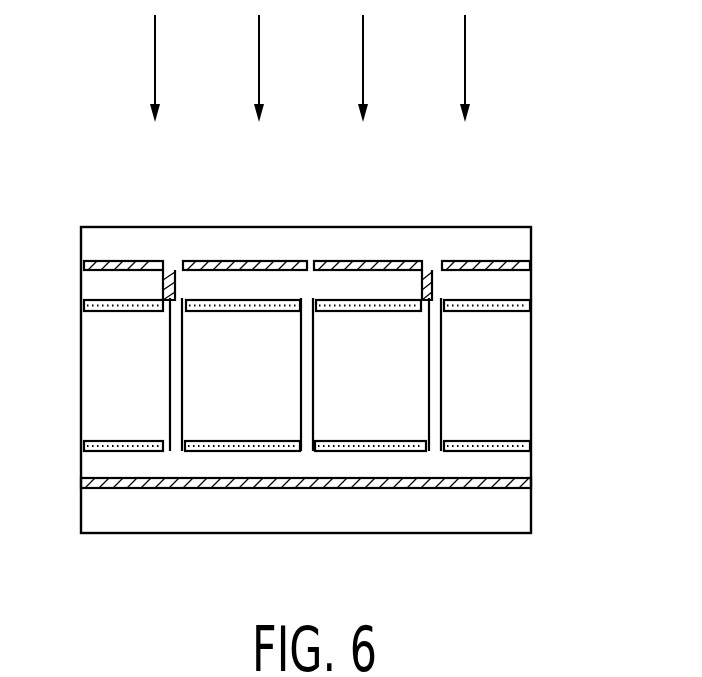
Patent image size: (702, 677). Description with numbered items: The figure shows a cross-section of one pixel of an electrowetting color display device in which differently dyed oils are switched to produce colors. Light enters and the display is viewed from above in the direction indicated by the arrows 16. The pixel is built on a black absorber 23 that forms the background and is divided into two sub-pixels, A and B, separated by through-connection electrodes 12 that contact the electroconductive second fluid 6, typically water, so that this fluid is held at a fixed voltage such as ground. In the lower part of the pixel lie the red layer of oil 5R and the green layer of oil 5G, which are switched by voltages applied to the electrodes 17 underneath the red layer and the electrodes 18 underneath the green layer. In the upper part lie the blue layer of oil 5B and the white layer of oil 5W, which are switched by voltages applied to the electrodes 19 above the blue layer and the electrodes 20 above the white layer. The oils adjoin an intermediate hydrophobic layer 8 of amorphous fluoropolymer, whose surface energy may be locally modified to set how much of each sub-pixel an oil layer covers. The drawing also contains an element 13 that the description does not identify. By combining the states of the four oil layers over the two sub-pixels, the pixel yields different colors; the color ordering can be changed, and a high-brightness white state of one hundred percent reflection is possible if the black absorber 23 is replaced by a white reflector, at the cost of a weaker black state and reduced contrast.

The arrows 16 is at (467, 55).
The transparent layer 13 is at (124, 239).
The electrode 12 is at (169, 298).
The electrodes 19 is at (249, 263).
The electrodes 20 is at (324, 266).
The white layer of oil 5W is at (96, 303).
The blue layer of oil 5B is at (206, 303).
The second fluid 6 is at (277, 318).
The green layer of oil 5G is at (92, 446).
The red layer of oil 5R is at (242, 451).
The electrodes 17 is at (195, 488).
The intermediate hydrophobic layer 8 is at (125, 468).
The electrodes 18 is at (345, 488).
The black absorber 23 is at (478, 515).